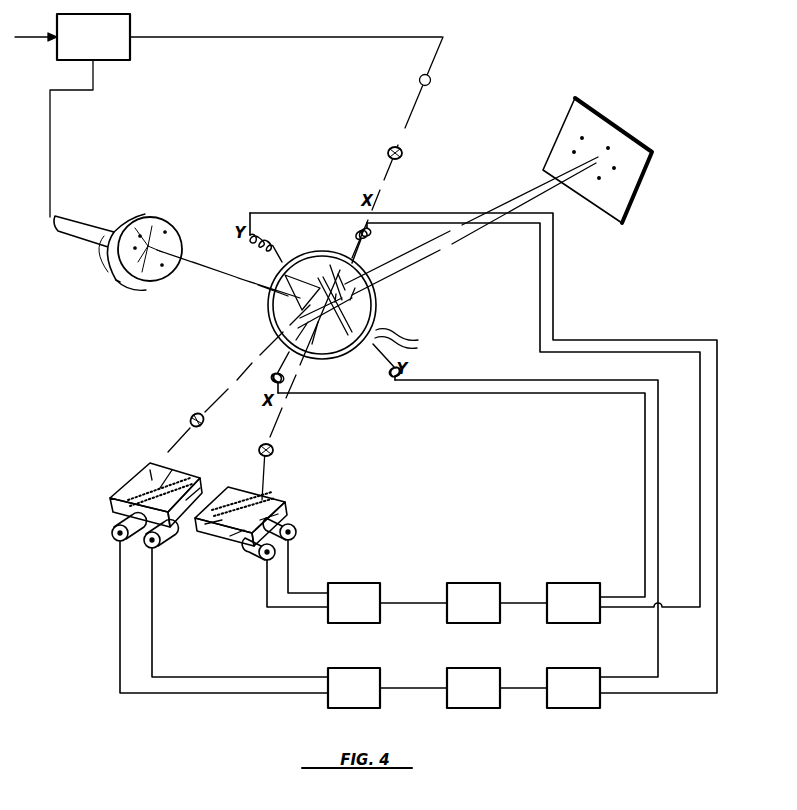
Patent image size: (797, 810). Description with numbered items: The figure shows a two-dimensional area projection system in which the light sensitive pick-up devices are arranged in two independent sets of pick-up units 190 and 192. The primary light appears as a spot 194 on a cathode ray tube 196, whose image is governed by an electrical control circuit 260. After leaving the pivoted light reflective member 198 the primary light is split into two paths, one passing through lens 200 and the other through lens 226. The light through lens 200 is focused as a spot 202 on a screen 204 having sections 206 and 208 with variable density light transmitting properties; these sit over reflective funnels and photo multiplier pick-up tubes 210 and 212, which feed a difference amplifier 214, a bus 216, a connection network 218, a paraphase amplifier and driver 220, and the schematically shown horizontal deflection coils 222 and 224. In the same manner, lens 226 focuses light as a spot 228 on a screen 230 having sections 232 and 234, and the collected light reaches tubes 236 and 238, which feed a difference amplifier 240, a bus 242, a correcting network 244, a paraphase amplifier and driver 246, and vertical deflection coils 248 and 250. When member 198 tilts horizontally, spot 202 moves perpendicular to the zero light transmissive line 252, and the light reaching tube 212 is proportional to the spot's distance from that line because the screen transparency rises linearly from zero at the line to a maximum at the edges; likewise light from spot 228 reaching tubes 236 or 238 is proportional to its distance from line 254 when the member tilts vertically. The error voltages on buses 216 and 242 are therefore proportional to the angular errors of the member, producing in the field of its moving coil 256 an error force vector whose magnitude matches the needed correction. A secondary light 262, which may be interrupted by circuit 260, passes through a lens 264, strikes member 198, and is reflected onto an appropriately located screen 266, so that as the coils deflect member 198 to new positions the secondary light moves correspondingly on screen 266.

The pick-up unit set 190 is at (142, 468).
The pick-up unit set 192 is at (280, 508).
The spot 194 is at (146, 280).
The cathode ray tube 196 is at (135, 214).
The light reflective member 198 is at (358, 301).
The lens 200 is at (192, 416).
The spot 202 is at (140, 486).
The screen 204 is at (118, 497).
The section 206 is at (146, 466).
The section 208 is at (192, 486).
The photo multiplier pick-up tube 210 is at (145, 545).
The photo multiplier pick-up tube 212 is at (114, 527).
The difference amplifier 214 is at (344, 698).
The bus 216 is at (402, 685).
The connection network 218 is at (463, 698).
The paraphase amplifier and driver 220 is at (563, 698).
The horizontal deflection coil 222 is at (385, 370).
The horizontal deflection coil 224 is at (268, 246).
The lens 226 is at (274, 450).
The spot 228 is at (213, 530).
The screen 230 is at (237, 540).
The section 232 is at (272, 530).
The section 234 is at (286, 519).
The tube 236 is at (264, 562).
The tube 238 is at (297, 532).
The difference amplifier 240 is at (344, 613).
The bus 242 is at (402, 600).
The correcting network 244 is at (463, 613).
The paraphase amplifier and driver 246 is at (563, 613).
The vertical deflection coil 248 is at (367, 238).
The vertical deflection coil 250 is at (281, 362).
The zero light transmissive line 252 is at (183, 482).
The line 254 is at (262, 502).
The moving coil 256 is at (377, 318).
The electrical control circuit 260 is at (82, 47).
The secondary light 262 is at (431, 80).
The lens 264 is at (402, 153).
The screen 266 is at (630, 143).